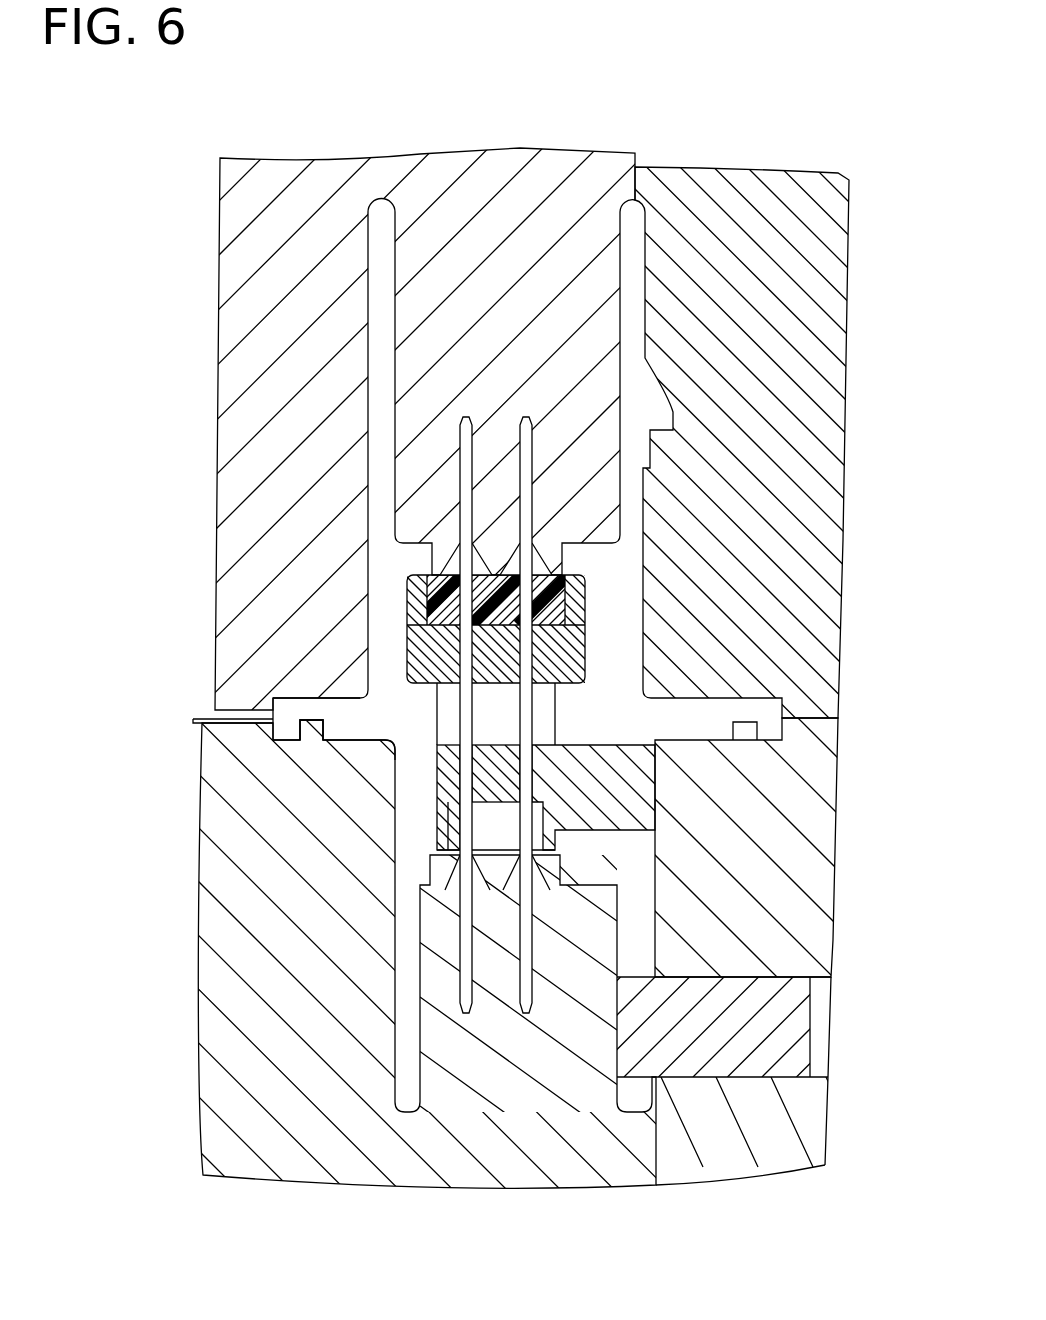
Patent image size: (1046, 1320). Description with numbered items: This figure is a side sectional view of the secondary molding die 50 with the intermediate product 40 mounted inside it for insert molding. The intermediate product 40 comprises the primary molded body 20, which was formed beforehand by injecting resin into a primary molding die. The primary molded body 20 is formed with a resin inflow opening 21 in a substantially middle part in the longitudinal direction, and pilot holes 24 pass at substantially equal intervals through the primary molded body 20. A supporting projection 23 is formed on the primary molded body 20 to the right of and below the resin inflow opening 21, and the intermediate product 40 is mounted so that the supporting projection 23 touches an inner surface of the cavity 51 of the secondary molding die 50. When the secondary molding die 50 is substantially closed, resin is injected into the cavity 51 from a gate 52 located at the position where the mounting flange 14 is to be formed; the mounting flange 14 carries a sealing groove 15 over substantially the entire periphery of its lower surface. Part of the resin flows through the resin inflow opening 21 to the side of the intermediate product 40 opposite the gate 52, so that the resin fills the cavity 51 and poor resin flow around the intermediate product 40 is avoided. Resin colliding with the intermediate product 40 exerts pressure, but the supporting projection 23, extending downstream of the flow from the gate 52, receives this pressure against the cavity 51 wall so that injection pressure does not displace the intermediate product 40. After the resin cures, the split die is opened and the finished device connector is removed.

The secondary molding die 50 is at (186, 330).
The intermediate product 40 is at (566, 634).
The primary molded body 20 is at (493, 785).
The mounting flange 14 is at (298, 705).
The gate 52 is at (207, 724).
The sealing groove 15 is at (303, 727).
The resin inflow opening 21 is at (460, 713).
The pilot holes 24 is at (476, 802).
The supporting projection 23 is at (640, 832).
The cavity 51 is at (610, 692).